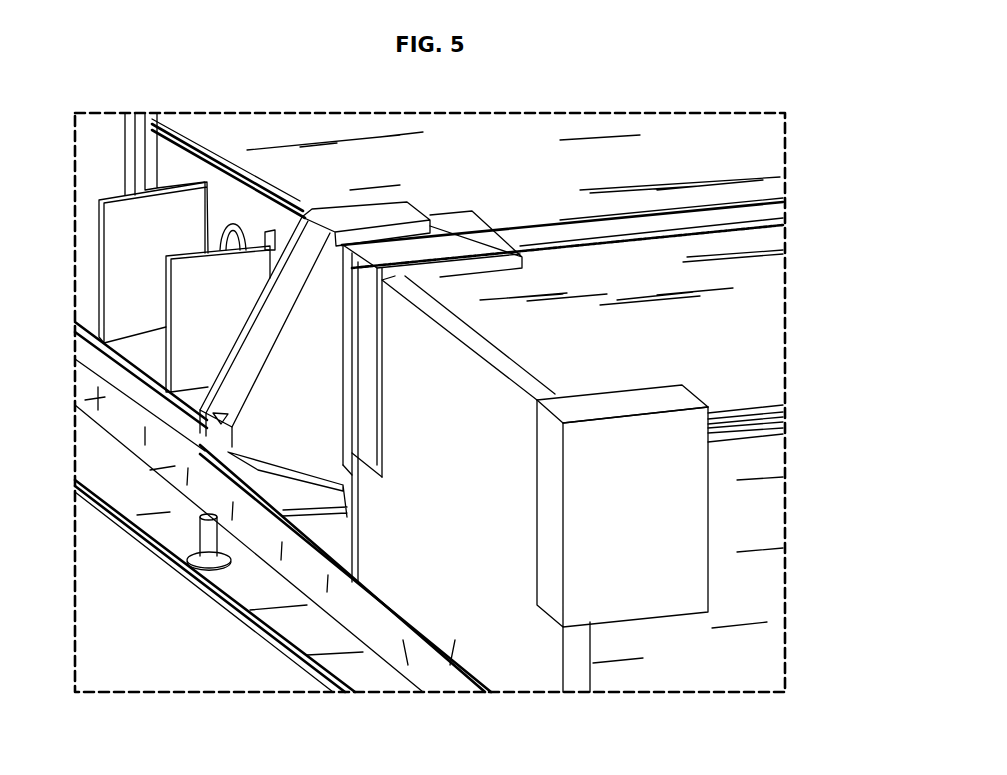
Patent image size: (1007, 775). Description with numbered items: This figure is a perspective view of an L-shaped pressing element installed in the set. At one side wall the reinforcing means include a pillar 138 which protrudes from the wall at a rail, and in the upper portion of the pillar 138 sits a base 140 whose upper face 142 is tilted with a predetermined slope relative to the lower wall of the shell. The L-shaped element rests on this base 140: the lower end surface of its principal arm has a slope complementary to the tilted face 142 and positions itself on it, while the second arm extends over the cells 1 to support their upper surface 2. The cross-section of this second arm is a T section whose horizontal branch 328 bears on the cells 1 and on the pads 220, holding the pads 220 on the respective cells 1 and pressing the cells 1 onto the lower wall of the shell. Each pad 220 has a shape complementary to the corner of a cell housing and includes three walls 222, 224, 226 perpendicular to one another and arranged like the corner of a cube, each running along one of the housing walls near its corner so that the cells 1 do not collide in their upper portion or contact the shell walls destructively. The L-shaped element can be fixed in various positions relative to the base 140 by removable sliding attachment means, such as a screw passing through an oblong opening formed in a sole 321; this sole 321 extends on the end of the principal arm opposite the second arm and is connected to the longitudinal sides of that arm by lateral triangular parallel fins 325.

The cell 1 is at (688, 150).
The upper surface 2 is at (574, 172).
The pillar 138 is at (338, 545).
The base 140 is at (287, 493).
The upper face 142 is at (315, 468).
The pad 220 is at (434, 196).
The wall 222 is at (550, 547).
The wall 224 is at (657, 507).
The wall 226 is at (460, 247).
The sole 321 is at (247, 422).
The lateral triangular parallel fin 325 is at (278, 306).
The horizontal branch 328 is at (375, 210).